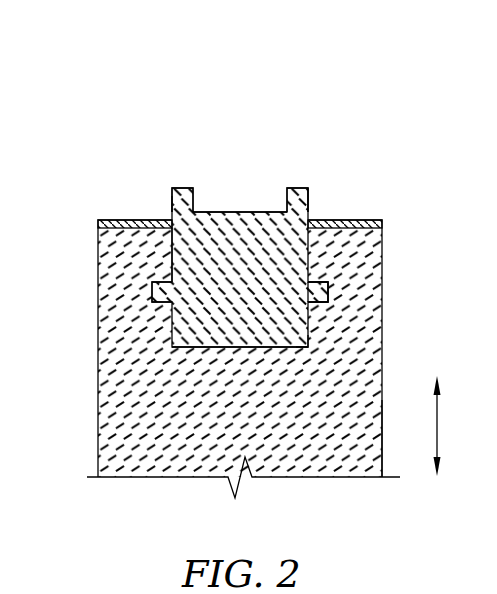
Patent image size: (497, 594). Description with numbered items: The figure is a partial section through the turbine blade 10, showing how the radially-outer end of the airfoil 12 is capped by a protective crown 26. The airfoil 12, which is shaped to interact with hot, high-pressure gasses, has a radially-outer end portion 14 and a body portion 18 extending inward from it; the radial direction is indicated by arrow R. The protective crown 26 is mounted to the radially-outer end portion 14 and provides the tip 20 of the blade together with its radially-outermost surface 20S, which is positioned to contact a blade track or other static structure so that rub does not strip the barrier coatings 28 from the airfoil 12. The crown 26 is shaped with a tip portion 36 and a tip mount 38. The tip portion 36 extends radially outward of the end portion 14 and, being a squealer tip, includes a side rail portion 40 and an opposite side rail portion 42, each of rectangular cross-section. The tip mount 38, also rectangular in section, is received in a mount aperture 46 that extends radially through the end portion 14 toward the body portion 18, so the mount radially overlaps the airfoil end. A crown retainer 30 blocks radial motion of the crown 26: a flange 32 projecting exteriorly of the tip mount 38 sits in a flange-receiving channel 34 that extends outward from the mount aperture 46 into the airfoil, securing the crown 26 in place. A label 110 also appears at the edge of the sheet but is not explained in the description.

The turbine blade 10 is at (113, 117).
The airfoil 12 is at (130, 432).
The radially-outer end portion 14 is at (135, 281).
The body portion 18 is at (333, 445).
The tip 20 is at (181, 187).
The radially-outermost surface 20S is at (297, 188).
The protective crown 26 is at (216, 245).
The barrier coatings 28 is at (115, 222).
The crown retainer 30 is at (433, 283).
The flange 32 is at (307, 297).
The flange-receiving channel 34 is at (330, 290).
The tip portion 36 is at (196, 200).
The tip mount 38 is at (215, 315).
The side rail portion 40 is at (172, 205).
The side rail portion 42 is at (308, 198).
The mount aperture 46 is at (296, 348).
The reference 110 is at (482, 50).
The radial direction arrow R is at (437, 437).